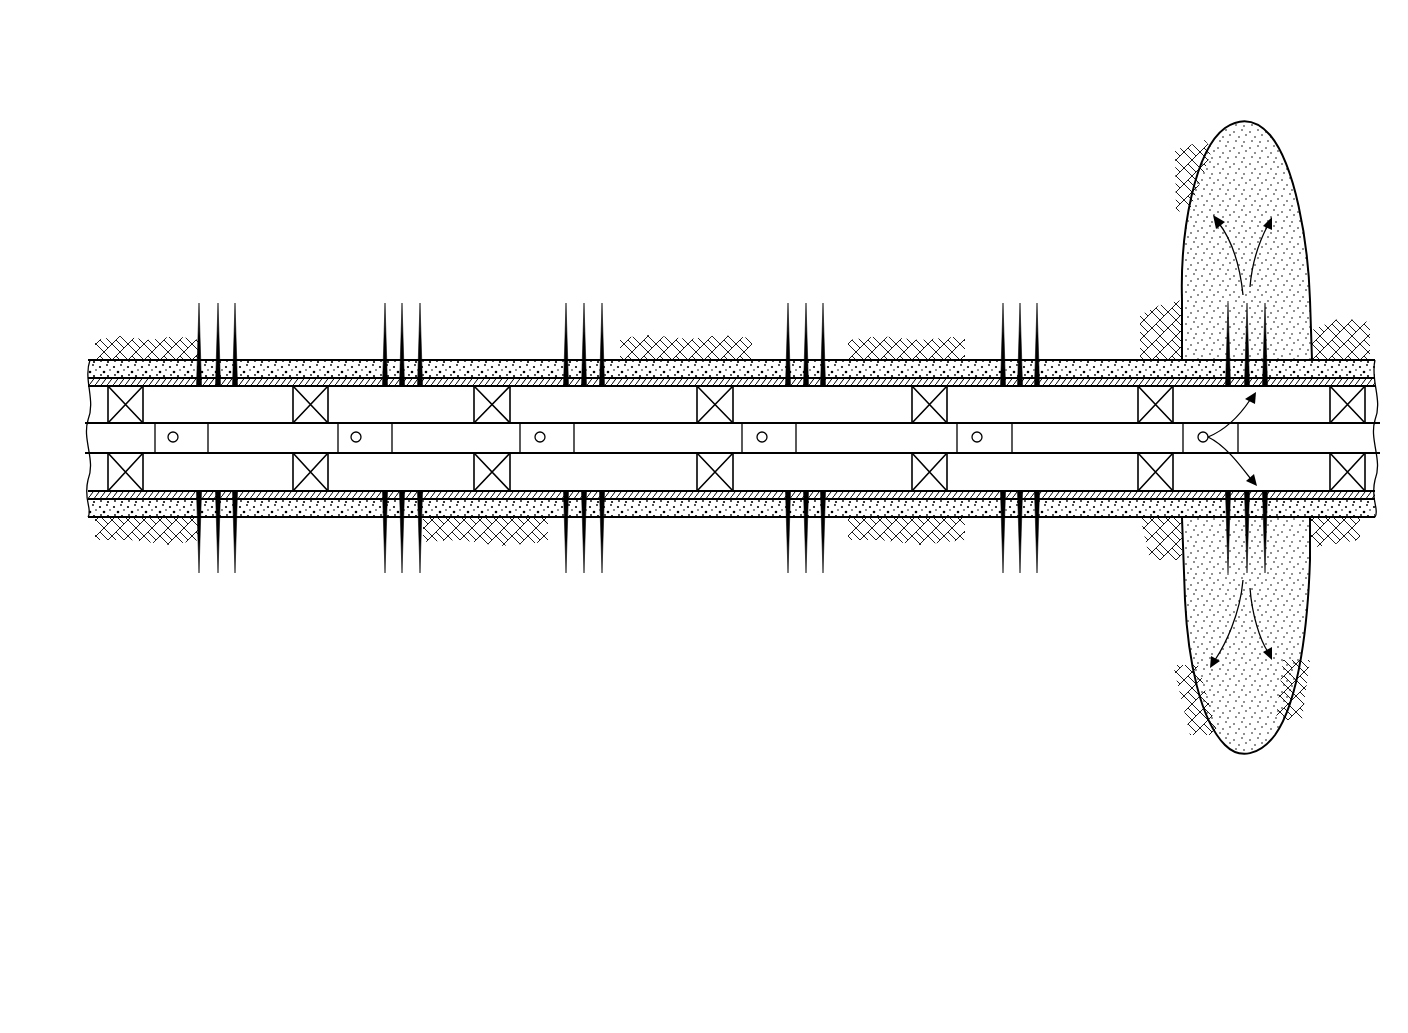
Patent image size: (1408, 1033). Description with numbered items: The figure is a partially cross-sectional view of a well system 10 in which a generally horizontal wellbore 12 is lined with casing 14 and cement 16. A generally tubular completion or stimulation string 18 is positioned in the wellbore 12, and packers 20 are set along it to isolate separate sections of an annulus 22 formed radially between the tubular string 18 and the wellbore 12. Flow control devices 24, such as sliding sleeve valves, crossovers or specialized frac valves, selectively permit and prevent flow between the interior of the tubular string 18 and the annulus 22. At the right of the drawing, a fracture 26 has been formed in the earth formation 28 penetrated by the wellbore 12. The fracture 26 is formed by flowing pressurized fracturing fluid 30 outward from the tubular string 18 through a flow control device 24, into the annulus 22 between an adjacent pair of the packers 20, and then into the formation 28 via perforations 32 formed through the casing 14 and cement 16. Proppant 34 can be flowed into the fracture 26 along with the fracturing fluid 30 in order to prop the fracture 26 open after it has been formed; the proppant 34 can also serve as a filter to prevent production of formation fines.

The well system 10 is at (194, 186).
The wellbore 12 is at (632, 482).
The casing 14 is at (455, 362).
The cement 16 is at (288, 360).
The tubular completion or stimulation string 18 is at (96, 404).
The packers 20 is at (143, 477).
The annulus 22 is at (882, 478).
The flow control devices 24 is at (168, 420).
The fracture 26 is at (1286, 169).
The earth formation 28 is at (1134, 633).
The fracturing fluid 30 is at (1230, 243).
The perforations 32 is at (199, 320).
The proppant 34 is at (1270, 708).